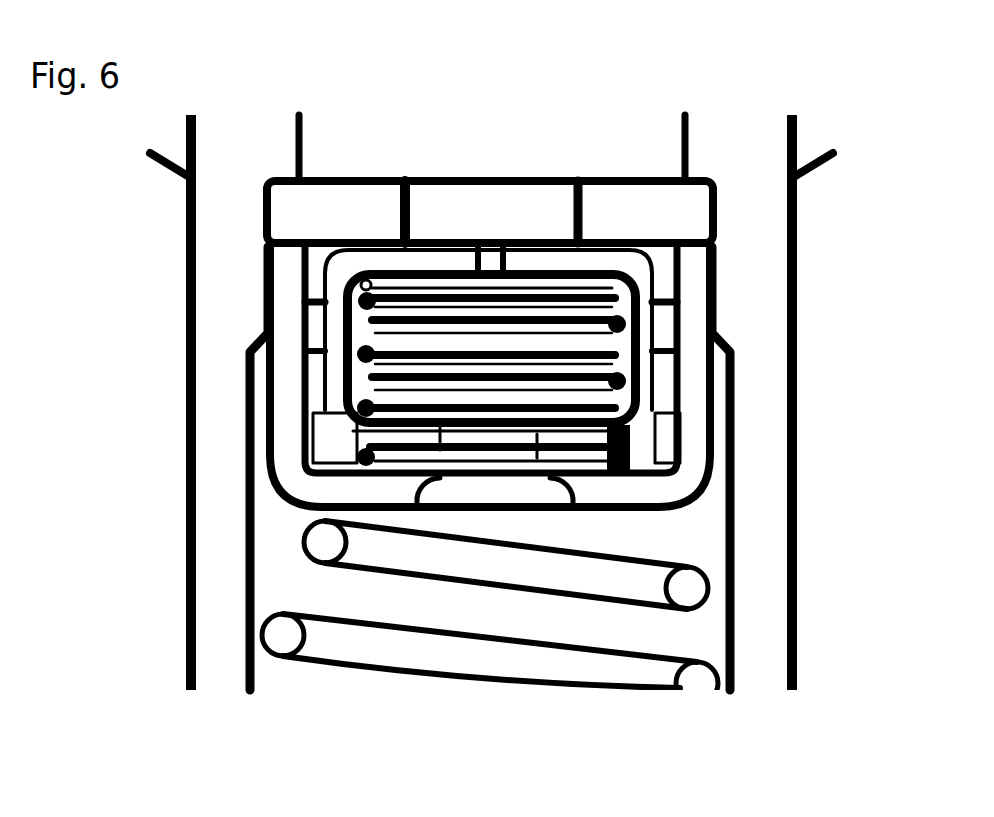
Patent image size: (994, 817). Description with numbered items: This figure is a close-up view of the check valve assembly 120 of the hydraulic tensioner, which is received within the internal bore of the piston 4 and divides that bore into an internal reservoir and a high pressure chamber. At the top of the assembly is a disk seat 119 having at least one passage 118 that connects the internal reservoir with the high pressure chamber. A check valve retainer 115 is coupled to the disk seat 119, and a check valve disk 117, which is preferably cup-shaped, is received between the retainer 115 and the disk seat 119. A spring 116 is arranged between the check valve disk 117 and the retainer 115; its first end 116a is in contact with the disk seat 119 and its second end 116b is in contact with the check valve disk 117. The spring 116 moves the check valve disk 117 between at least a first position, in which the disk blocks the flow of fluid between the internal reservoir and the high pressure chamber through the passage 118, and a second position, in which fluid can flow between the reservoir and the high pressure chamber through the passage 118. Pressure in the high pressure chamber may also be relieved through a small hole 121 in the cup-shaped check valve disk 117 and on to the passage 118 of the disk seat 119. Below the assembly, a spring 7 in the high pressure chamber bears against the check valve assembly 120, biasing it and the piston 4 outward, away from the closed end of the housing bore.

The piston 4 is at (772, 320).
The spring 7 is at (447, 650).
The check valve retainer 115 is at (310, 497).
The spring 116 is at (513, 372).
The first end of spring 116a is at (347, 277).
The second end of spring 116b is at (357, 457).
The check valve disk 117 is at (333, 353).
The passage 118 is at (487, 197).
The disk seat 119 is at (327, 195).
The check valve assembly 120 is at (72, 169).
The small hole 121 is at (487, 257).